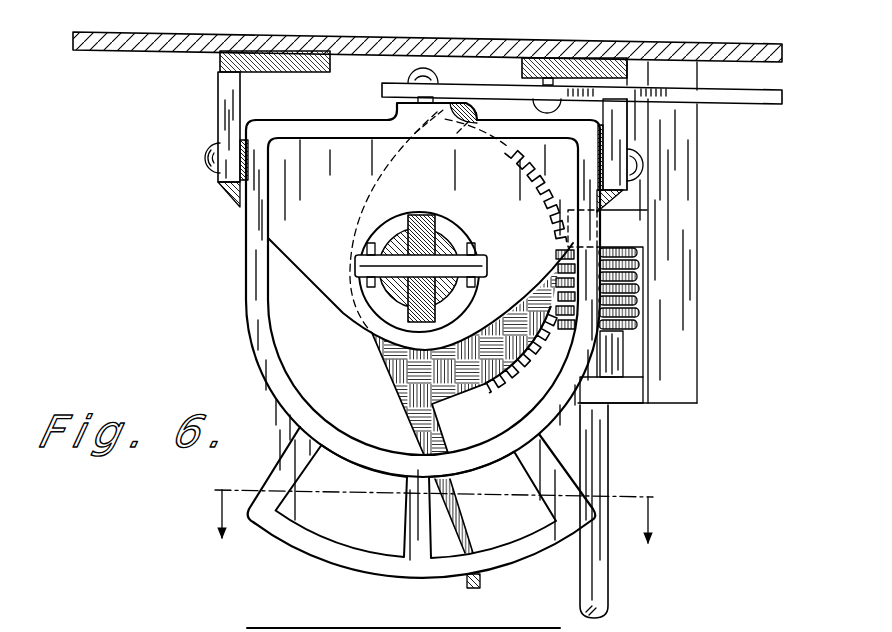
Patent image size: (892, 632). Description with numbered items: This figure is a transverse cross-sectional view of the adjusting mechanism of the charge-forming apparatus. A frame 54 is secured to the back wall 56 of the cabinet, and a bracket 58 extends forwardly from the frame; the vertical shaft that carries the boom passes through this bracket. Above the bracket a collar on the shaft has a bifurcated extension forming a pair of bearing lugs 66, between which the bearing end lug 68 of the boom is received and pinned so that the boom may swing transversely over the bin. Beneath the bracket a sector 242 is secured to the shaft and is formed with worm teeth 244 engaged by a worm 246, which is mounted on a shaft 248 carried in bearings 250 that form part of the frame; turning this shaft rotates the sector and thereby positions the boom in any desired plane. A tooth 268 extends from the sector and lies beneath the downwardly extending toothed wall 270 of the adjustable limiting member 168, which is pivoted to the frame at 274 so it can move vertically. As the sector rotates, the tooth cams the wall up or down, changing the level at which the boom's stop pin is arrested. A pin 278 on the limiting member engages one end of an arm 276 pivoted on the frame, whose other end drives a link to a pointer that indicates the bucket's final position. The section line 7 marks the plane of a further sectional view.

The back wall 56 is at (316, 42).
The frame 54 is at (278, 69).
The bracket 58 is at (228, 98).
The pivot 274 is at (230, 162).
The arm 276 is at (500, 88).
The pin 278 is at (388, 99).
The adjustable limiting member 168 is at (243, 320).
The bearing lugs 66 is at (393, 232).
The bearing end lug 68 is at (428, 225).
The sector 242 is at (377, 358).
The worm teeth 244 is at (513, 378).
The worm 246 is at (636, 300).
The bearings 250 is at (603, 230).
The shaft 248 is at (598, 444).
The tooth 268 is at (485, 581).
The downwardly extending wall 270 is at (368, 567).
The section line 7- 7 is at (437, 533).